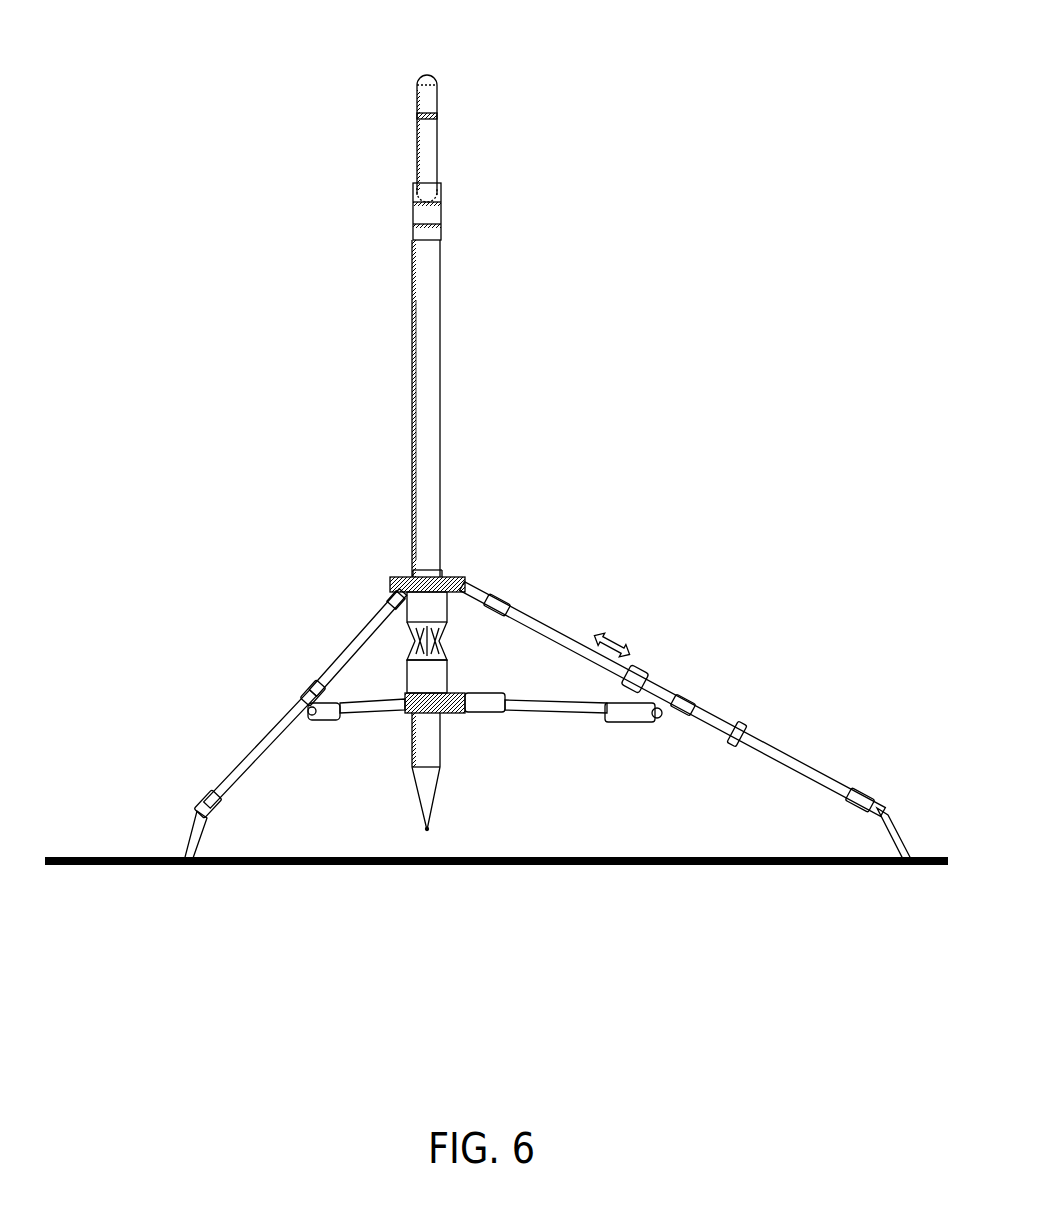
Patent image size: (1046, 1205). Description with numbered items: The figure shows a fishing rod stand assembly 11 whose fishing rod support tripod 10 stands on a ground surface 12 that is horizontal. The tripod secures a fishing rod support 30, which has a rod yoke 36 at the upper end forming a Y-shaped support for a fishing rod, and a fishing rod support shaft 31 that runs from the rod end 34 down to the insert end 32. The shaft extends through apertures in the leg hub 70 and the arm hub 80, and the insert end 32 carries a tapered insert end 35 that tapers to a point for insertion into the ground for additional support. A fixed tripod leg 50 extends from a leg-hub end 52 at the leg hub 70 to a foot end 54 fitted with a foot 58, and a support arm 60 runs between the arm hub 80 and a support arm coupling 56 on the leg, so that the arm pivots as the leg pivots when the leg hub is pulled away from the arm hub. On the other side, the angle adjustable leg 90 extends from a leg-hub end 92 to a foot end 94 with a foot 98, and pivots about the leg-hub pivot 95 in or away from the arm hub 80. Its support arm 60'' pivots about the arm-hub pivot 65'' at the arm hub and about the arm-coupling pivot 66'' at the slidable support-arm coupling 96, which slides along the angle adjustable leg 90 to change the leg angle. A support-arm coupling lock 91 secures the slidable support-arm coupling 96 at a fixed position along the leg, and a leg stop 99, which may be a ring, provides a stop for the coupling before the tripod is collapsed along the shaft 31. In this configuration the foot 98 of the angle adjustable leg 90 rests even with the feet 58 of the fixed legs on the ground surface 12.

The fishing rod support tripod 10 is at (556, 618).
The fishing rod stand assembly 11 is at (680, 229).
The ground surface 12 is at (705, 872).
The fishing rod support 30 is at (432, 312).
The fishing rod support shaft 31 is at (428, 372).
The insert end 32 is at (432, 788).
The rod end 34 is at (432, 210).
The tapered insert end 35 is at (450, 828).
The rod yoke 36 is at (430, 148).
The first leg 50 is at (352, 655).
The leg-hub end 52 is at (408, 578).
The foot end 54 is at (210, 805).
The support arm coupling 56 is at (312, 697).
The foot 58 is at (192, 838).
The support arm 60 is at (356, 751).
The support arm 60'' is at (580, 753).
The arm-hub pivot 65'' is at (517, 745).
The arm-coupling pivot 66'' is at (665, 761).
The leg hub 70 is at (447, 577).
The arm hub 80 is at (456, 703).
The angle adjustable leg 90 is at (772, 758).
The support-arm coupling lock 91 is at (688, 708).
The leg-hub end 92 is at (495, 600).
The foot end 94 is at (862, 808).
The leg-hub pivot 95 is at (455, 580).
The slidable support-arm coupling 96 is at (636, 680).
The foot 98 is at (885, 815).
The leg stop 99 is at (738, 740).